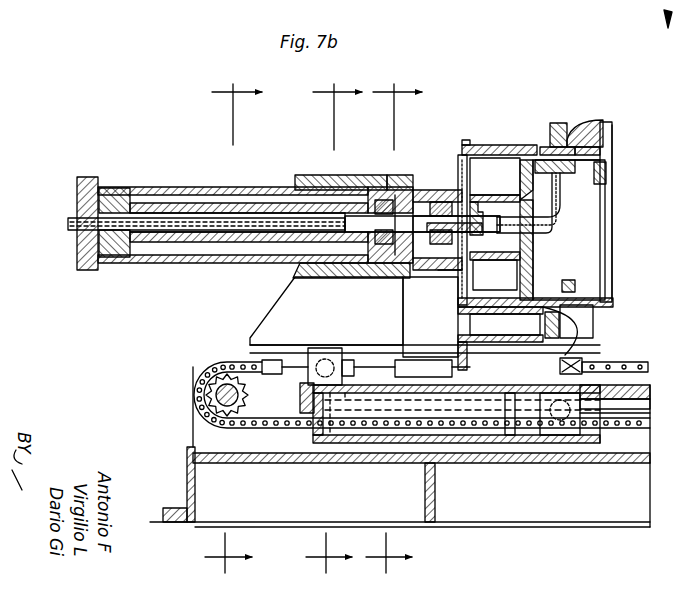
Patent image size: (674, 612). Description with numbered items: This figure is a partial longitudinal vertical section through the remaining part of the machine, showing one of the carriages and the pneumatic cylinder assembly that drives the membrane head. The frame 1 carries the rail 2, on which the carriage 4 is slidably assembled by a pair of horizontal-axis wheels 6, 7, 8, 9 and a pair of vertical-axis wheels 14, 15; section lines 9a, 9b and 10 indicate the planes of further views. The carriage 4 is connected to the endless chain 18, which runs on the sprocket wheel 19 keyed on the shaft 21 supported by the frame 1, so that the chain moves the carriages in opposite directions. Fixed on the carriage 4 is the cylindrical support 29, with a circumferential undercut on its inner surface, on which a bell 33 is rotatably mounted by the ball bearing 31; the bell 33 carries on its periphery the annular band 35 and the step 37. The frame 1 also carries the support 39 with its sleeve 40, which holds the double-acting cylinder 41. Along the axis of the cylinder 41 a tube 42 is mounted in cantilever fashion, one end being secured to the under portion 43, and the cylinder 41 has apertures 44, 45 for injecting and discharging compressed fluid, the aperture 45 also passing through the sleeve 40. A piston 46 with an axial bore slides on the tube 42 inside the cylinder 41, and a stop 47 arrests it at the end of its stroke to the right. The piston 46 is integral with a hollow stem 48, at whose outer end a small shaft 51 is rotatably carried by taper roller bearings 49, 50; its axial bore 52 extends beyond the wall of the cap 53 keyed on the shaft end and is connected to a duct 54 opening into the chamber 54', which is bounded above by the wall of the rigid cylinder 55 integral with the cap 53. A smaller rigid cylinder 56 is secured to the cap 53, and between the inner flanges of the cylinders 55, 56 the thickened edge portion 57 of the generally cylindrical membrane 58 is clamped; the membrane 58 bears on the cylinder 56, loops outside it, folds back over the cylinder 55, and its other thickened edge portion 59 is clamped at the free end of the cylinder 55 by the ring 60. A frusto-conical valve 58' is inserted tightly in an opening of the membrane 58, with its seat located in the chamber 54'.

The frame 1 is at (547, 515).
The rail 2 is at (622, 387).
The carriage 4 is at (459, 352).
The wheel 6 is at (326, 355).
The wheel 7 is at (330, 455).
The wheel 8 is at (578, 364).
The wheel 9 is at (558, 447).
The section line 9a is at (334, 336).
The section line 9b is at (394, 336).
The wheel 10 is at (233, 336).
The wheel 14 is at (372, 455).
The wheel 15 is at (505, 445).
The endless chain 18 is at (280, 427).
The sprocket wheel 19 is at (205, 402).
The shaft 21 is at (216, 390).
The cylindrical support 29 is at (478, 145).
The ball bearing 31 is at (548, 147).
The bell 33 is at (563, 123).
The annular band 35 is at (586, 132).
The step 37 is at (584, 120).
The support 39 is at (270, 320).
The sleeve 40 is at (301, 175).
The double-acting cylinder 41 is at (152, 187).
The tube 42 is at (262, 218).
The under portion 43 is at (82, 177).
The aperture 44 is at (80, 240).
The aperture 45 is at (396, 176).
The piston 46 is at (110, 188).
The stop 47 is at (372, 215).
The hollow stem 48 is at (236, 203).
The taper roller bearing 49 is at (371, 200).
The taper roller bearing 50 is at (438, 193).
The small shaft 51 is at (420, 238).
The axial bore 52 is at (440, 258).
The cap 53 is at (501, 250).
The duct 54 is at (535, 233).
The chamber 54' is at (543, 146).
The rigid cylinder 55 is at (566, 172).
The rigid cylinder 56 is at (495, 196).
The thickened edge portion 57 is at (522, 185).
The membrane 58 is at (422, 174).
The valve 58' is at (541, 210).
The thickened edge portion 59 is at (604, 170).
The ring 60 is at (612, 181).